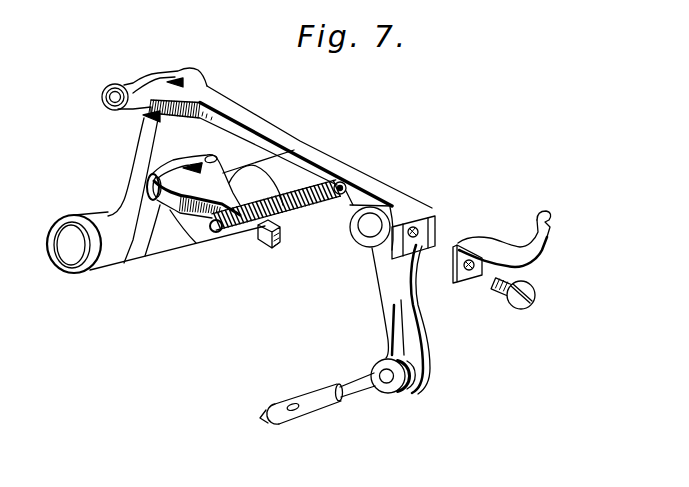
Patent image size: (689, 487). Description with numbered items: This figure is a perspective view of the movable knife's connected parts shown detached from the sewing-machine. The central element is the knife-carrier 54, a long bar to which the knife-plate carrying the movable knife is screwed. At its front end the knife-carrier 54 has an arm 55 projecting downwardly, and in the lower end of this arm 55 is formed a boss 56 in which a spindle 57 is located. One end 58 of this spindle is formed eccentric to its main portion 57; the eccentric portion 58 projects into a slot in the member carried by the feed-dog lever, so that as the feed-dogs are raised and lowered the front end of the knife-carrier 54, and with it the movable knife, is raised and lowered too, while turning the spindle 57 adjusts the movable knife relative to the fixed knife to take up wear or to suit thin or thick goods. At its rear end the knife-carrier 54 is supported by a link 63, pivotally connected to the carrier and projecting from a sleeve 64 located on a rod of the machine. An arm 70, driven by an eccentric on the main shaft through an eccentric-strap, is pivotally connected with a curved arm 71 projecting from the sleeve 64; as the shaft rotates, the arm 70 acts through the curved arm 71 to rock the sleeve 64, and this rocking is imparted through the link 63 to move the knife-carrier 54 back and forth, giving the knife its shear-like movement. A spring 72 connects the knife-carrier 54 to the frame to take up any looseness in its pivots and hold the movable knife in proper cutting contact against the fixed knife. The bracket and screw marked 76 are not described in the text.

The knife-carrier 54 is at (322, 158).
The arm 55 is at (385, 299).
The boss 56 is at (396, 393).
The spindle 57 is at (322, 411).
The eccentric end of spindle 58 is at (367, 391).
The link 63 is at (130, 207).
The sleeve 64 is at (104, 215).
The arm 70 is at (231, 178).
The curved arm 71 is at (157, 232).
The spring 72 is at (289, 209).
The bracket 76 is at (546, 214).